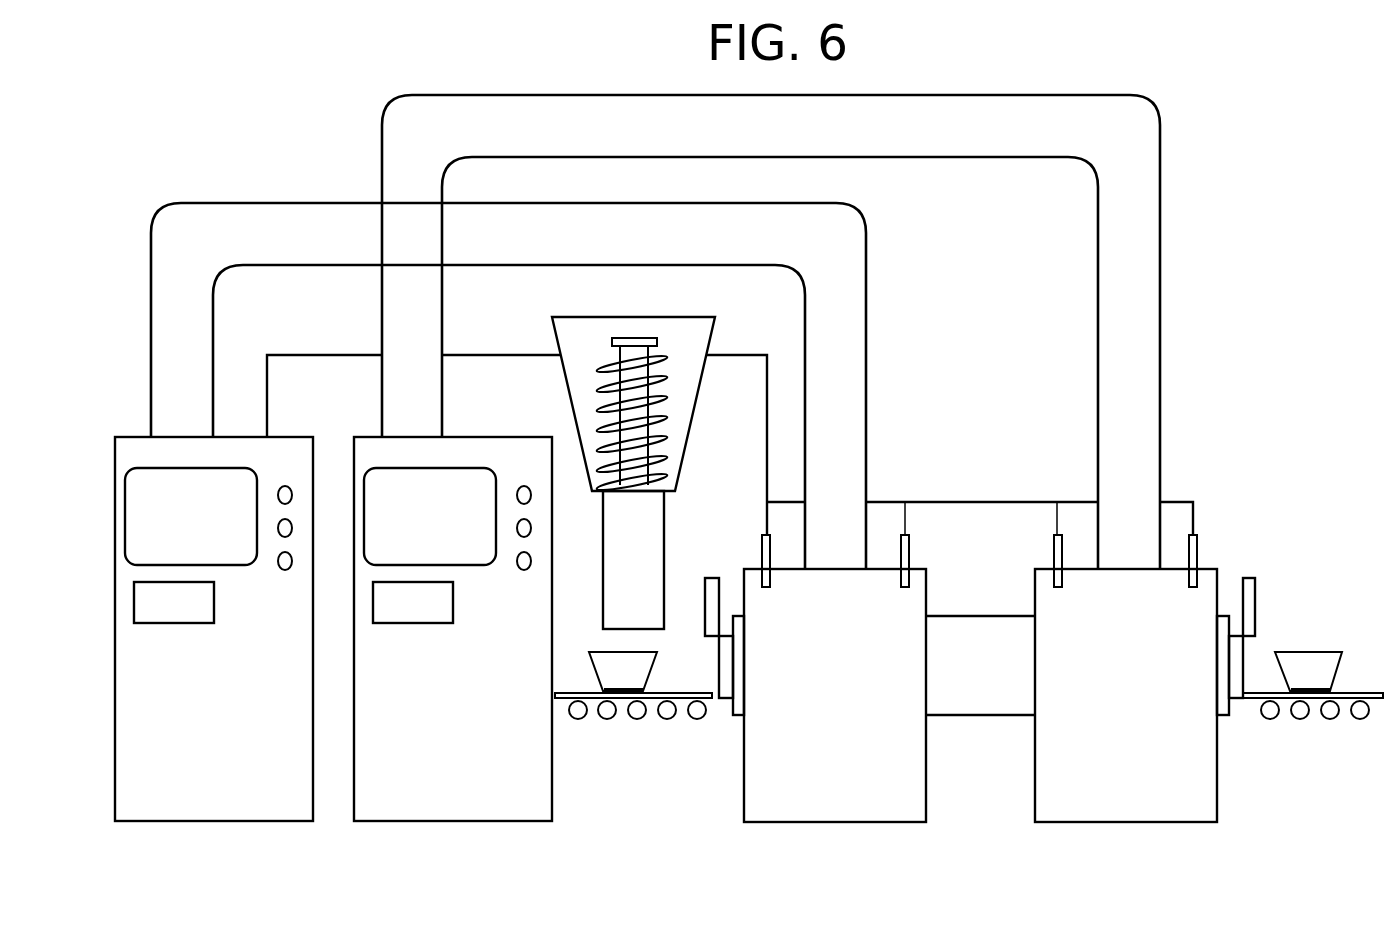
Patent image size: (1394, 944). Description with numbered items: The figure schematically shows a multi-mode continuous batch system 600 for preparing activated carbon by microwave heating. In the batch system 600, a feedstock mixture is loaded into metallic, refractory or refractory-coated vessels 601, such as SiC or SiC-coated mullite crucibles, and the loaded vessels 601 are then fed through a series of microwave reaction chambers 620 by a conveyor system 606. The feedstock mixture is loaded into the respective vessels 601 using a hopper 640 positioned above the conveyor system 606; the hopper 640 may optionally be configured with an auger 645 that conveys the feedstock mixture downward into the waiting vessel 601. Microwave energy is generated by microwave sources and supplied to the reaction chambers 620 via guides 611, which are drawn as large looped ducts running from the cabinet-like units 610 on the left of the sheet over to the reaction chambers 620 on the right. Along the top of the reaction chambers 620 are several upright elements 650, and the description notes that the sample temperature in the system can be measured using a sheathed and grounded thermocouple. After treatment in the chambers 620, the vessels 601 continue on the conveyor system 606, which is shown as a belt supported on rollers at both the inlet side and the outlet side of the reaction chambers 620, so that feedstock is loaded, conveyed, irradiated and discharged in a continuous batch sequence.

The batch system 600 is at (1196, 201).
The vessels 601 is at (593, 667).
The conveyor system 606 is at (674, 717).
The control cabinets 610 is at (376, 810).
The guides 611 is at (790, 133).
The microwave reaction chambers 620 is at (1052, 812).
The hopper 640 is at (553, 338).
The auger 645 is at (642, 433).
The sensors 650 is at (1054, 545).